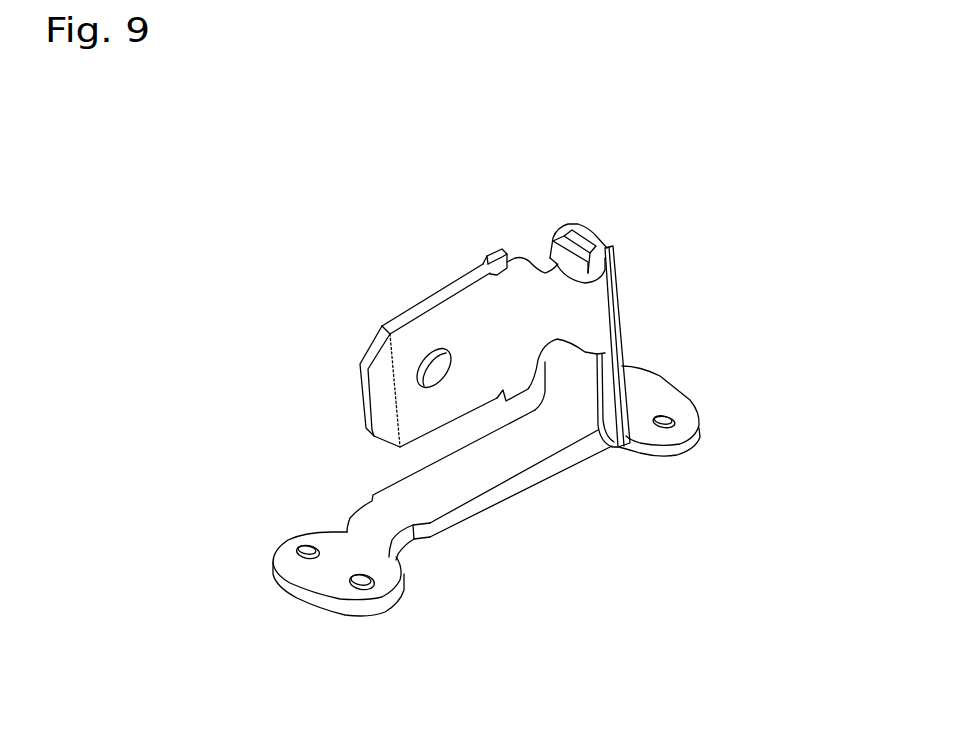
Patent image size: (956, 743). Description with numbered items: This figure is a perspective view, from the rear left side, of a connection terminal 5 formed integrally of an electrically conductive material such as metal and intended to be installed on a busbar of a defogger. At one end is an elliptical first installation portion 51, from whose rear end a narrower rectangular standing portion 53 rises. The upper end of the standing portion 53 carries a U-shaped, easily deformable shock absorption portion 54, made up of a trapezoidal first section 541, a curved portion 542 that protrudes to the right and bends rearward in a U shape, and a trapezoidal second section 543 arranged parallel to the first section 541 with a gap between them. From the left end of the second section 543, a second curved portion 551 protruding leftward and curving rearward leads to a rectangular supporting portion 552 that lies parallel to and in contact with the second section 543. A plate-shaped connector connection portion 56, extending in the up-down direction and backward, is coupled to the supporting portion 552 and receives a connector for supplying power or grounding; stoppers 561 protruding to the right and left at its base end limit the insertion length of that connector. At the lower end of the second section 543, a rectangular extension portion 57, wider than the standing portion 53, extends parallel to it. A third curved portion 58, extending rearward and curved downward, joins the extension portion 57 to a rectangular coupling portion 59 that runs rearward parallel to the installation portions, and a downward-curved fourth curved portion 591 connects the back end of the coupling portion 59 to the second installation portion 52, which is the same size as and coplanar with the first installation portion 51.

The connection terminal 5 is at (310, 210).
The first installation portion 51 is at (689, 418).
The second installation portion 52 is at (314, 574).
The standing portion 53 is at (619, 361).
The shock absorption portion 54 is at (605, 204).
The first section 541 is at (602, 236).
The curved portion 542 is at (563, 226).
The second section 543 is at (566, 254).
The second curved portion 551 is at (597, 313).
The supporting portion 552 is at (565, 318).
The connector connection portion 56 is at (428, 328).
The stoppers 561 is at (502, 267).
The extension portion 57 is at (578, 388).
The third curved portion 58 is at (601, 438).
The coupling portion 59 is at (493, 466).
The fourth curved portion 591 is at (384, 539).